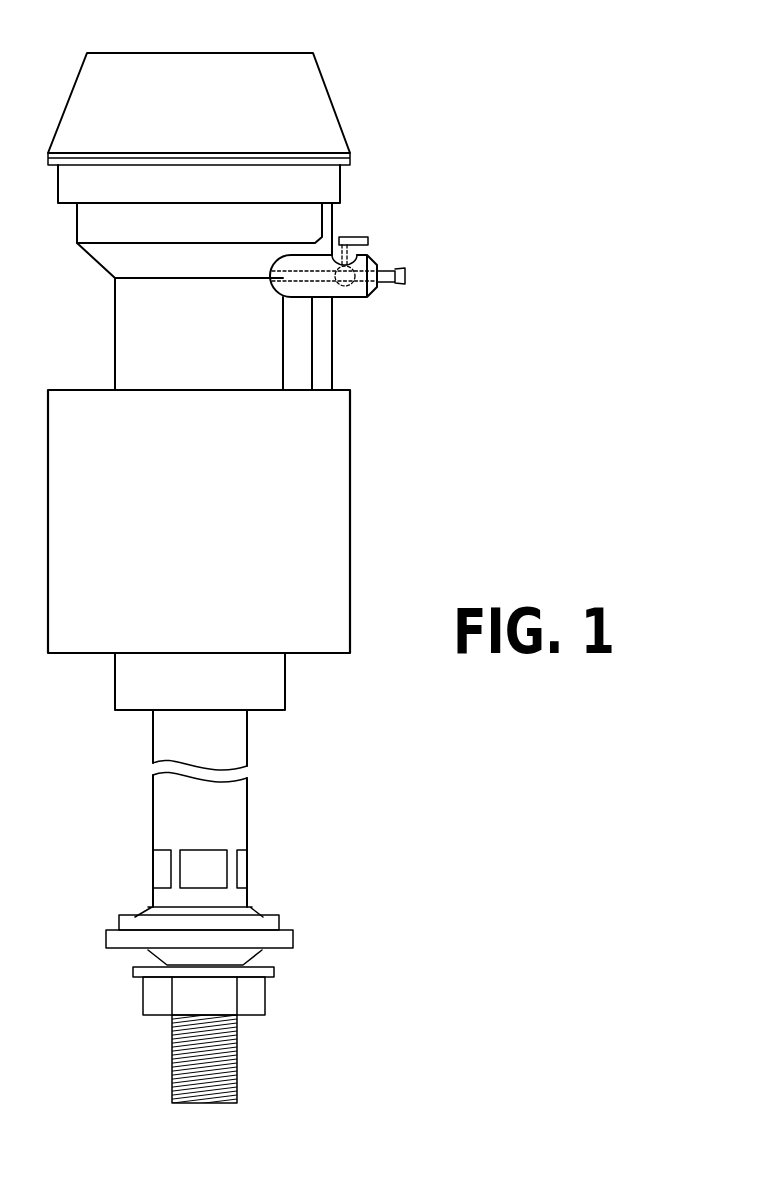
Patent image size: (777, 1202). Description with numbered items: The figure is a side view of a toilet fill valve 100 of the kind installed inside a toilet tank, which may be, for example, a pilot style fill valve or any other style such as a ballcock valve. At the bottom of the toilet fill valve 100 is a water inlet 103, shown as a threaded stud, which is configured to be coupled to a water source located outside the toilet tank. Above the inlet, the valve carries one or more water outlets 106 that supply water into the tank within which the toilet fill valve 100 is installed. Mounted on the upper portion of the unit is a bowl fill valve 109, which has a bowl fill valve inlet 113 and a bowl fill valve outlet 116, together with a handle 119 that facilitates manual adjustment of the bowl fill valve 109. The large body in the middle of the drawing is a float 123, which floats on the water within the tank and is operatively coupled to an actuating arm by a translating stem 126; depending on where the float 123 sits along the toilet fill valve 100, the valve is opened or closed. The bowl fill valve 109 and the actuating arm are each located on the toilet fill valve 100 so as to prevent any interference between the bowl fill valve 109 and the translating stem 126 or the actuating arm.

The toilet fill valve 100 is at (548, 68).
The water inlet 103 is at (203, 1105).
The water outlet 106 is at (205, 870).
The bowl fill valve 109 is at (350, 298).
The bowl fill valve inlet 113 is at (293, 283).
The bowl fill valve outlet 116 is at (407, 273).
The handle 119 is at (350, 235).
The float 123 is at (320, 537).
The translating stem 126 is at (322, 349).